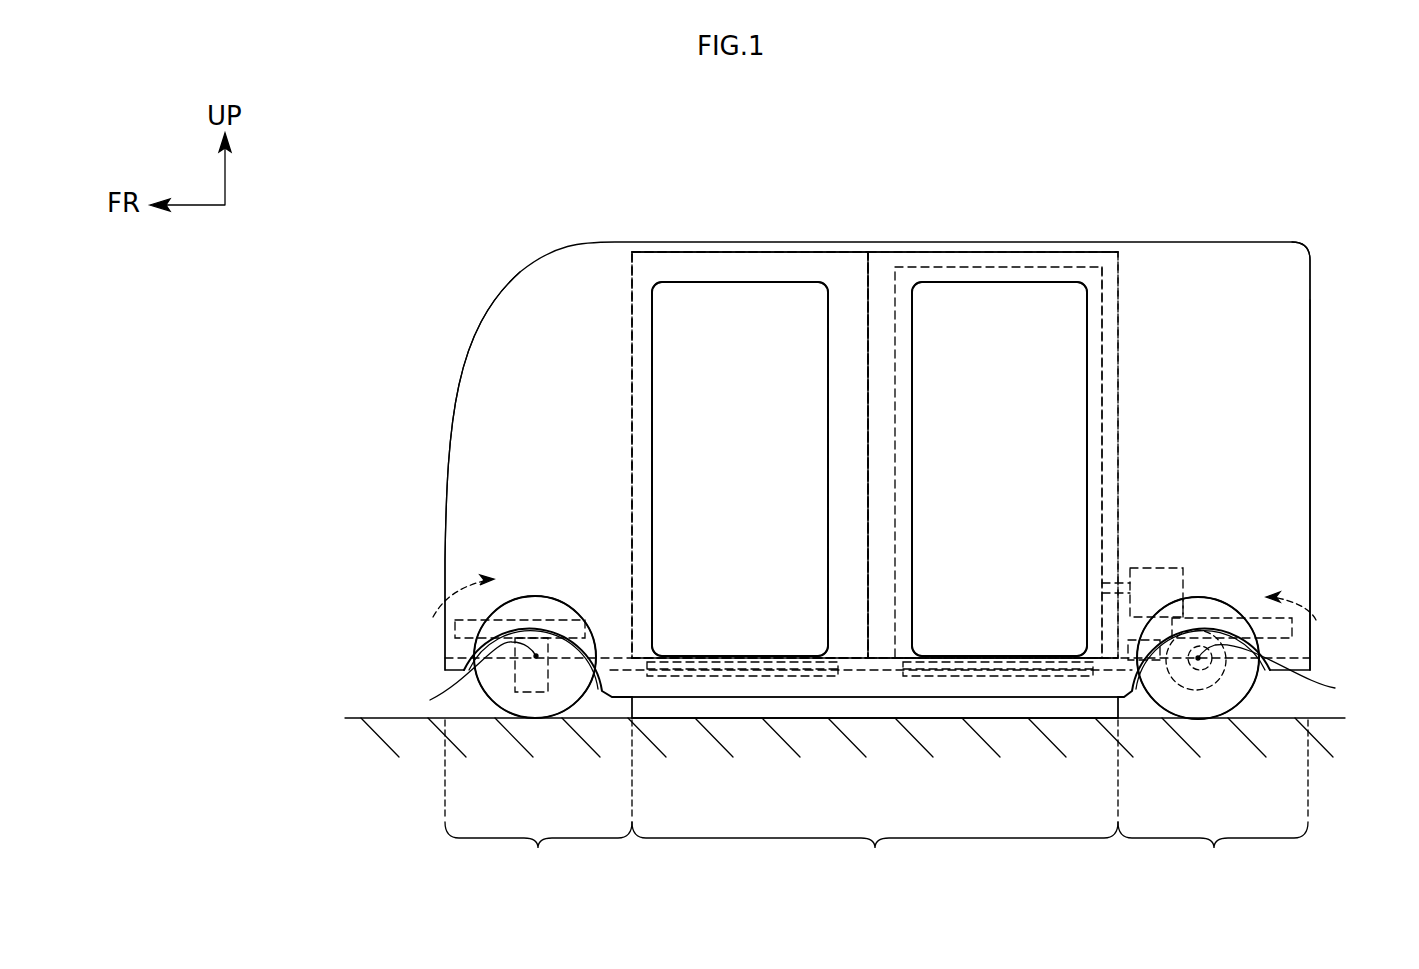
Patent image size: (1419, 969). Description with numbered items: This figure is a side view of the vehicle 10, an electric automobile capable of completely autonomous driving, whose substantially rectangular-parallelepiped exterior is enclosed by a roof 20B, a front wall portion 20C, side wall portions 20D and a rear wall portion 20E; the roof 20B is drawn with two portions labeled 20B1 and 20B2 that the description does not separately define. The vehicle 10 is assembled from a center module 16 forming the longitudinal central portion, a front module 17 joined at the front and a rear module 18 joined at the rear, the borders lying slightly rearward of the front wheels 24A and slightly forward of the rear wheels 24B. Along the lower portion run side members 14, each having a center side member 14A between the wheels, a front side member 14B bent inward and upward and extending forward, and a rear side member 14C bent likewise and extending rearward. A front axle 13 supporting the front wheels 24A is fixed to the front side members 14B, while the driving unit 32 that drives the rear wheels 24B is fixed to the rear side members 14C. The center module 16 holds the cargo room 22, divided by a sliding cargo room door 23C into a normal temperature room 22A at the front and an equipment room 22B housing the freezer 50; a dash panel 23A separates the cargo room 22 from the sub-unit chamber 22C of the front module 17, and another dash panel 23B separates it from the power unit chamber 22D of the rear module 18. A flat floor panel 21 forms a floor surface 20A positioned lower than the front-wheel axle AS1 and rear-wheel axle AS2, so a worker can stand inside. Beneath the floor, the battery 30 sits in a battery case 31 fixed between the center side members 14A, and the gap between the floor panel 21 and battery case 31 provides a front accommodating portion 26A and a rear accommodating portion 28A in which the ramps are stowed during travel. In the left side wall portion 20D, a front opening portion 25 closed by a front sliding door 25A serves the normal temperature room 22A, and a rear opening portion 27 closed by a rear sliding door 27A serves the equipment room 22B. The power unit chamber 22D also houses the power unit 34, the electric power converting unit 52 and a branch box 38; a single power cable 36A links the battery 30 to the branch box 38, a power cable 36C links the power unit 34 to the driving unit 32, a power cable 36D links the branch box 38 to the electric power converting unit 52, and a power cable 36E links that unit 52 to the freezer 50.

The vehicle 10 is at (1204, 201).
The front axle 13 is at (526, 702).
The side member 14 is at (875, 659).
The center side member 14A is at (830, 698).
The front side member 14B is at (530, 600).
The rear side member 14C is at (1216, 630).
The center module 16 is at (875, 798).
The front module 17 is at (538, 798).
The rear module 18 is at (1213, 798).
The floor surface 20A is at (845, 655).
The roof 20B is at (875, 180).
The roof rear portion 20B1 is at (745, 245).
The roof front portion 20B2 is at (678, 248).
The front wall portion 20C is at (452, 500).
The side wall portion 20D is at (1155, 325).
The rear wall portion 20E is at (1312, 352).
The floor panel 21 is at (733, 656).
The cargo room 22 is at (875, 380).
The normal temperature room 22A is at (853, 293).
The equipment room 22B is at (1024, 263).
The sub-unit chamber 22C is at (456, 628).
The power unit chamber 22D is at (1294, 628).
The dash panel 23A is at (630, 300).
The dash panel 23B is at (1128, 290).
The cargo room door 23C is at (864, 443).
The front wheel 24A is at (556, 712).
The rear wheel 24B is at (1200, 714).
The front opening portion 25 is at (658, 345).
The front sliding door 25A is at (668, 412).
The front accommodating portion 26A is at (700, 698).
The rear opening portion 27 is at (1082, 358).
The rear sliding door 27A is at (1055, 412).
The rear accommodating portion 28A is at (956, 678).
The battery 30 is at (925, 698).
The battery case 31 is at (878, 707).
The driving unit 32 is at (1220, 684).
The power unit 34 is at (1140, 568).
The power cable 36A is at (1118, 697).
The power cable 36C is at (1196, 615).
The power cable 36D is at (1122, 640).
The power cable 36E is at (1128, 585).
The branch box 38 is at (1180, 706).
The freezer 50 is at (1105, 438).
The electric power converting unit 52 is at (1160, 580).
The axle of the front wheels AS1 is at (431, 700).
The axle of the rear wheels AS2 is at (1292, 673).